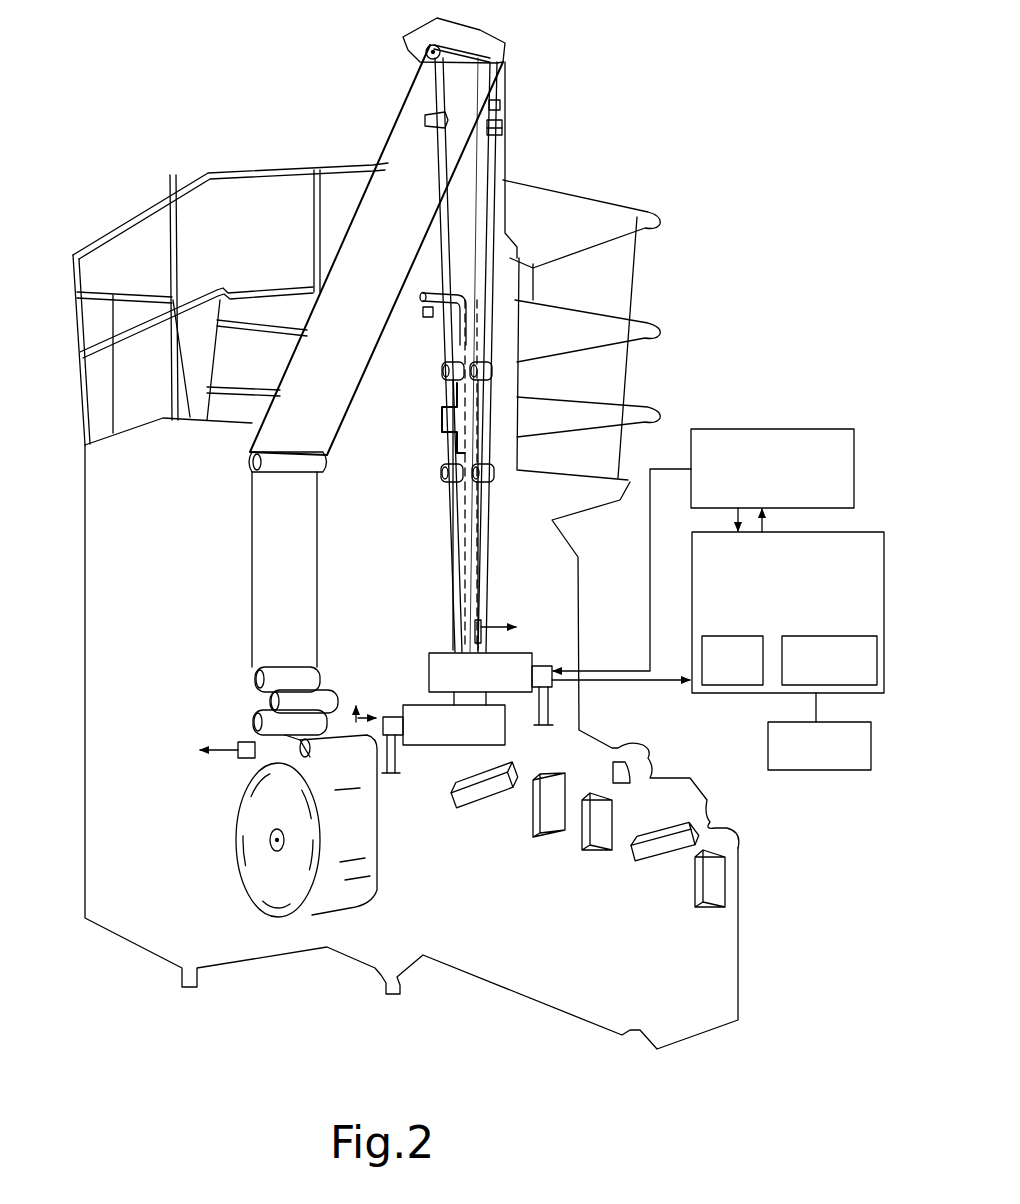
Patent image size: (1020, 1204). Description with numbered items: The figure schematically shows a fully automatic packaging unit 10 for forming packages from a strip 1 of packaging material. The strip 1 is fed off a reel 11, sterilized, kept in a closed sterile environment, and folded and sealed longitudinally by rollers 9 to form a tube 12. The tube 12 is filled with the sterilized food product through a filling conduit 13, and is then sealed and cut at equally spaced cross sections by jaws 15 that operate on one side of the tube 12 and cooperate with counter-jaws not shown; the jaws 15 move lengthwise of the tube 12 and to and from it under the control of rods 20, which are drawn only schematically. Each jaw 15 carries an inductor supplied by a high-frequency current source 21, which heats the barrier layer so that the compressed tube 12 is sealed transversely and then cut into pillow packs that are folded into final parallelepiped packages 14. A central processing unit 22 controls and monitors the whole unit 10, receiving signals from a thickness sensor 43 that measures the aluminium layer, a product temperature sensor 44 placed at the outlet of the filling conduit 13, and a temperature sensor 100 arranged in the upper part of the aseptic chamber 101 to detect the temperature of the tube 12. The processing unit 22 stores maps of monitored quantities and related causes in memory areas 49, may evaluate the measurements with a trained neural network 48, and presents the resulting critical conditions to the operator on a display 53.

The strip of packaging material 1 is at (364, 136).
The packaging unit 10 is at (632, 178).
The temperature sensor 100 is at (498, 105).
The aseptic chamber 101 is at (497, 168).
The rollers 9 is at (445, 378).
The tube 12 is at (454, 510).
The filling conduit 13 is at (480, 563).
The product temperature sensor 44 is at (490, 637).
The jaws 15 is at (420, 717).
The rods 20 is at (396, 758).
The thickness sensor 43 is at (242, 760).
The reel 11 is at (253, 875).
The packages 14 is at (598, 845).
The high-frequency current source 21 is at (854, 474).
The central processing unit 22 is at (878, 568).
The memory areas 49 is at (715, 684).
The neural network 48 is at (872, 643).
The display 53 is at (830, 770).